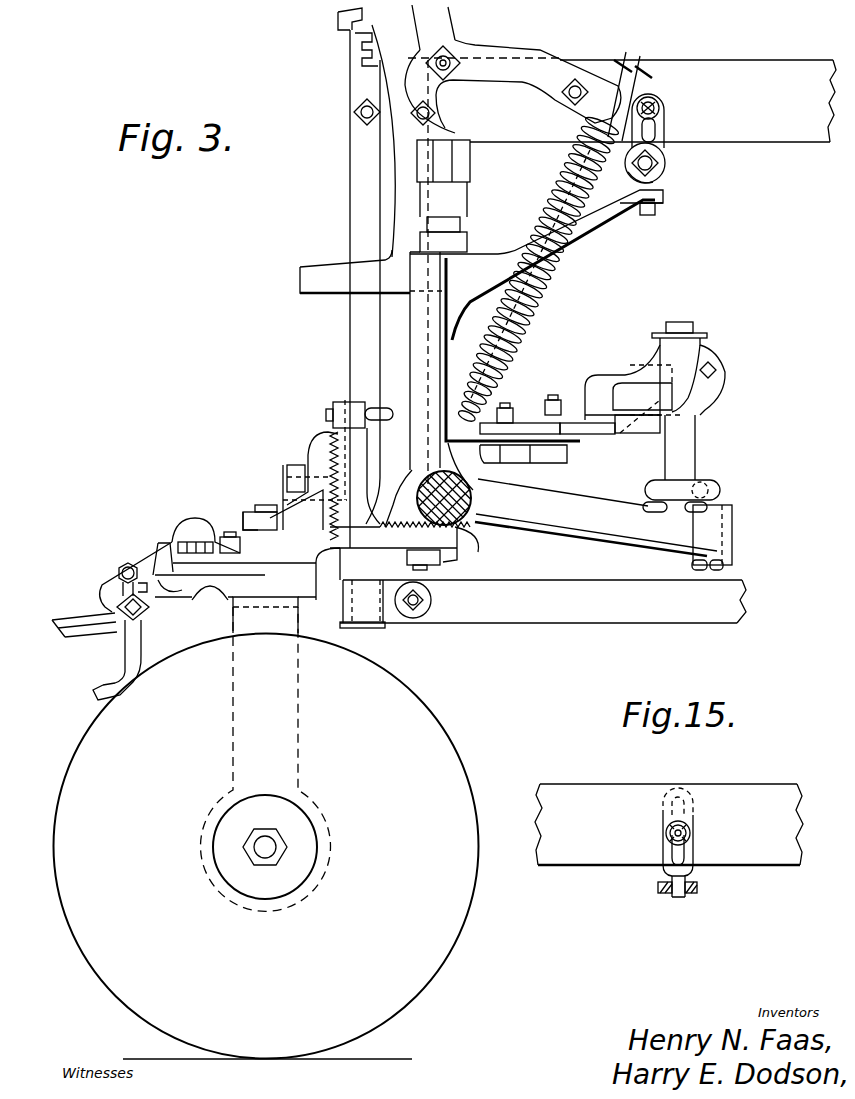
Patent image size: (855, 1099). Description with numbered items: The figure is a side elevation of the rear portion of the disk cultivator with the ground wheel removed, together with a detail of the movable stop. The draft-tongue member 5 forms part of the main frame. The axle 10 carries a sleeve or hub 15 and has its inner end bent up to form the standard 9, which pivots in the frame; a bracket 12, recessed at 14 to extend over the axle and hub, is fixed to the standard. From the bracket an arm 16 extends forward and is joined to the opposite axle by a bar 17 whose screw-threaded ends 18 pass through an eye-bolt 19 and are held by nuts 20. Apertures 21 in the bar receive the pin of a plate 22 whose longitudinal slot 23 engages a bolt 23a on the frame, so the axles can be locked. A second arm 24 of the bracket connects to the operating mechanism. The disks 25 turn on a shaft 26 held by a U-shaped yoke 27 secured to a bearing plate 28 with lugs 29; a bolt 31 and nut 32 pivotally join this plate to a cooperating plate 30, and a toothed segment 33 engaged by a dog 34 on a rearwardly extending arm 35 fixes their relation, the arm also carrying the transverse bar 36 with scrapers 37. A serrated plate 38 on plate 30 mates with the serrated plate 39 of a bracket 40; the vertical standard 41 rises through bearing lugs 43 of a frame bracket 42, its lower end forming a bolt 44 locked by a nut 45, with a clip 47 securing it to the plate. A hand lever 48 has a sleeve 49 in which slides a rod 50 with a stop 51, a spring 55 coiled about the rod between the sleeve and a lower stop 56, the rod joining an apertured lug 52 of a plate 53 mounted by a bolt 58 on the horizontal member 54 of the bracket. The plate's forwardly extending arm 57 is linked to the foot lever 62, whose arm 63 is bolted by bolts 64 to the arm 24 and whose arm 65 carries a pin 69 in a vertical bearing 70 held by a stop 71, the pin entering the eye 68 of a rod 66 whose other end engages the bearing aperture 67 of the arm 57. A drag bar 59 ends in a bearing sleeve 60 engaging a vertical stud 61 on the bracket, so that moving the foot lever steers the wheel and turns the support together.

In FIG. 3, the forwardly converging members 5 is at (800, 62).
In FIG. 15, the forwardly converging members 5 is at (777, 790).
In FIG. 3, the standard or pivot lug 9 is at (443, 223).
In FIG. 3, the axle 10 is at (478, 528).
In FIG. 3, the bracket 12 is at (418, 335).
In FIG. 3, the recess 14 is at (477, 503).
In FIG. 3, the sleeve or hub 15 is at (468, 537).
In FIG. 3, the arm 16 is at (505, 247).
In FIG. 15, the bar 17 is at (658, 890).
In FIG. 3, the screw-threaded ends 18 is at (660, 160).
In FIG. 3, the eye-bolt 19 is at (660, 181).
In FIG. 3, the nuts 20 is at (660, 168).
In FIG. 15, the apertures 21 is at (690, 893).
In FIG. 3, the plate 22 is at (662, 121).
In FIG. 15, the plate 22 is at (665, 848).
In FIG. 3, the longitudinal slot 23 is at (660, 100).
In FIG. 15, the longitudinal slot 23 is at (680, 856).
In FIG. 3, the bolt 23a is at (655, 100).
In FIG. 15, the bolt 23a is at (693, 827).
In FIG. 3, the second arm or projection 24 is at (530, 450).
In FIG. 3, the disks 25 is at (462, 762).
In FIG. 3, the shaft 26 is at (265, 838).
In FIG. 3, the U-shaped yoke 27 is at (258, 620).
In FIG. 3, the bearing plate 28 is at (222, 598).
In FIG. 3, the downwardly extending lugs 29 is at (292, 597).
In FIG. 3, the cooperating plate 30 is at (240, 526).
In FIG. 3, the bolt 31 is at (265, 505).
In FIG. 3, the nut 32 is at (252, 514).
In FIG. 3, the toothed segment 33 is at (214, 588).
In FIG. 3, the dog or pawl 34 is at (172, 540).
In FIG. 3, the rearwardly extending arm 35 is at (160, 584).
In FIG. 3, the transverse bar 36 is at (116, 600).
In FIG. 3, the scrapers 37 is at (125, 657).
In FIG. 3, the upwardly extending plate 38 is at (326, 432).
In FIG. 3, the serrated plate 39 is at (312, 500).
In FIG. 3, the bracket 40 is at (336, 402).
In FIG. 3, the vertical standard 41 is at (350, 161).
In FIG. 3, the bracket 42 is at (395, 223).
In FIG. 3, the bearing lugs 43 is at (345, 25).
In FIG. 3, the bolt 44 is at (286, 472).
In FIG. 3, the nut 45 is at (322, 445).
In FIG. 3, the clip 47 is at (375, 408).
In FIG. 3, the hand lever 48 is at (445, 33).
In FIG. 3, the sleeve or bearing 49 is at (576, 79).
In FIG. 3, the rod 50 is at (643, 66).
In FIG. 3, the stop 51 is at (622, 60).
In FIG. 3, the apertured lug 52 is at (412, 488).
In FIG. 3, the plate 53 is at (397, 515).
In FIG. 3, the horizontal member 54 is at (400, 535).
In FIG. 3, the spring 55 is at (527, 321).
In FIG. 3, the stop 56 is at (512, 407).
In FIG. 3, the forwardly extending arm 57 is at (602, 517).
In FIG. 3, the bolt 58 is at (428, 569).
In FIG. 3, the drag bar 59 is at (530, 580).
In FIG. 3, the bearing sleeve or apertured lug 60 is at (392, 608).
In FIG. 3, the vertical stud 61 is at (366, 630).
In FIG. 3, the foot lever 62 is at (650, 423).
In FIG. 3, the arm 63 is at (588, 436).
In FIG. 3, the bolts 64 is at (553, 400).
In FIG. 3, the arm 65 is at (647, 361).
In FIG. 3, the rod or bar 66 is at (720, 488).
In FIG. 3, the bearing aperture 67 is at (732, 526).
In FIG. 3, the eye 68 is at (698, 481).
In FIG. 3, the pin 69 is at (687, 460).
In FIG. 3, the vertical bearing 70 is at (717, 397).
In FIG. 3, the stop 71 is at (697, 333).